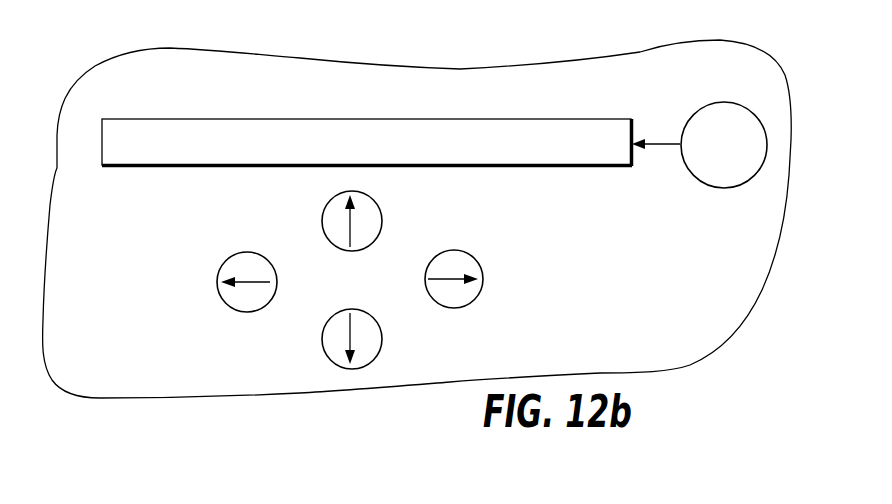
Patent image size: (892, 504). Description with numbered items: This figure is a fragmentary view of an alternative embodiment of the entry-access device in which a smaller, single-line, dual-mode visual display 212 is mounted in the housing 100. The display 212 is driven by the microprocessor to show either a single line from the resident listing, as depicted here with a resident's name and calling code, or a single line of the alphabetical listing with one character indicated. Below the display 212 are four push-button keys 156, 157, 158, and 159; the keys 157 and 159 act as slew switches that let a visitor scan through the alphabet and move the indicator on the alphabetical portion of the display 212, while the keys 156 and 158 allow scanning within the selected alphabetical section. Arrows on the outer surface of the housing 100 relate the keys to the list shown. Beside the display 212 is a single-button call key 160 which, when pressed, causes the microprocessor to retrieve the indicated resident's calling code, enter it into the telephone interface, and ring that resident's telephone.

The housing 100 is at (573, 92).
The visual display 212 is at (416, 128).
The call key 160 is at (721, 102).
The push-button key 156 is at (381, 204).
The push-button key 157 is at (257, 251).
The push-button key 158 is at (381, 343).
The push-button key 159 is at (481, 264).